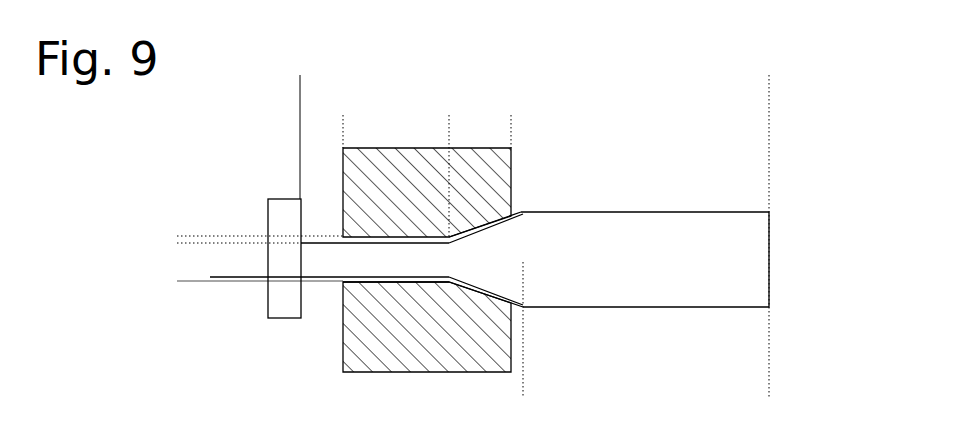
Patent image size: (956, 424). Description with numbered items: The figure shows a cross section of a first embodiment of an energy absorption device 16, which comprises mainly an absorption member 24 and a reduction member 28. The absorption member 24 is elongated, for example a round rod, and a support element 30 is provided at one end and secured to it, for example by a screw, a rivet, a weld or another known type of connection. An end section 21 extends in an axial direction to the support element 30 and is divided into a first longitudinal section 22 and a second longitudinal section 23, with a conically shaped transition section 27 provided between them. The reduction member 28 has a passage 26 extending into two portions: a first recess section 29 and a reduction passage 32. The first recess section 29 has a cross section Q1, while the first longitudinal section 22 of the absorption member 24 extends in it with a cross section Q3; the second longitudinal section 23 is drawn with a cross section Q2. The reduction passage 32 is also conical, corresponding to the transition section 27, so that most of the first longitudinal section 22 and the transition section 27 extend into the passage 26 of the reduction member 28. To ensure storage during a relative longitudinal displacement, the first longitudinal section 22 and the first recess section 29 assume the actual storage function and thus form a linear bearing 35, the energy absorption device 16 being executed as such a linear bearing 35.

The energy absorption device 16 is at (606, 48).
The end section 21 is at (769, 83).
The first longitudinal section 22 is at (301, 270).
The second longitudinal section 23 is at (523, 390).
The absorption member 24 is at (741, 265).
The passage 26 is at (424, 282).
The transition section 27 is at (449, 270).
The reduction member 28 is at (364, 352).
The first recess section 29 is at (343, 123).
The support element 30 is at (284, 305).
The reduction passage 32 is at (449, 123).
The linear bearing 35 is at (392, 228).
The cross section of the first recess section Q1 is at (182, 243).
The outlet pipe diameter Q2 is at (605, 340).
The cross section of the first longitudinal section Q3 is at (217, 297).